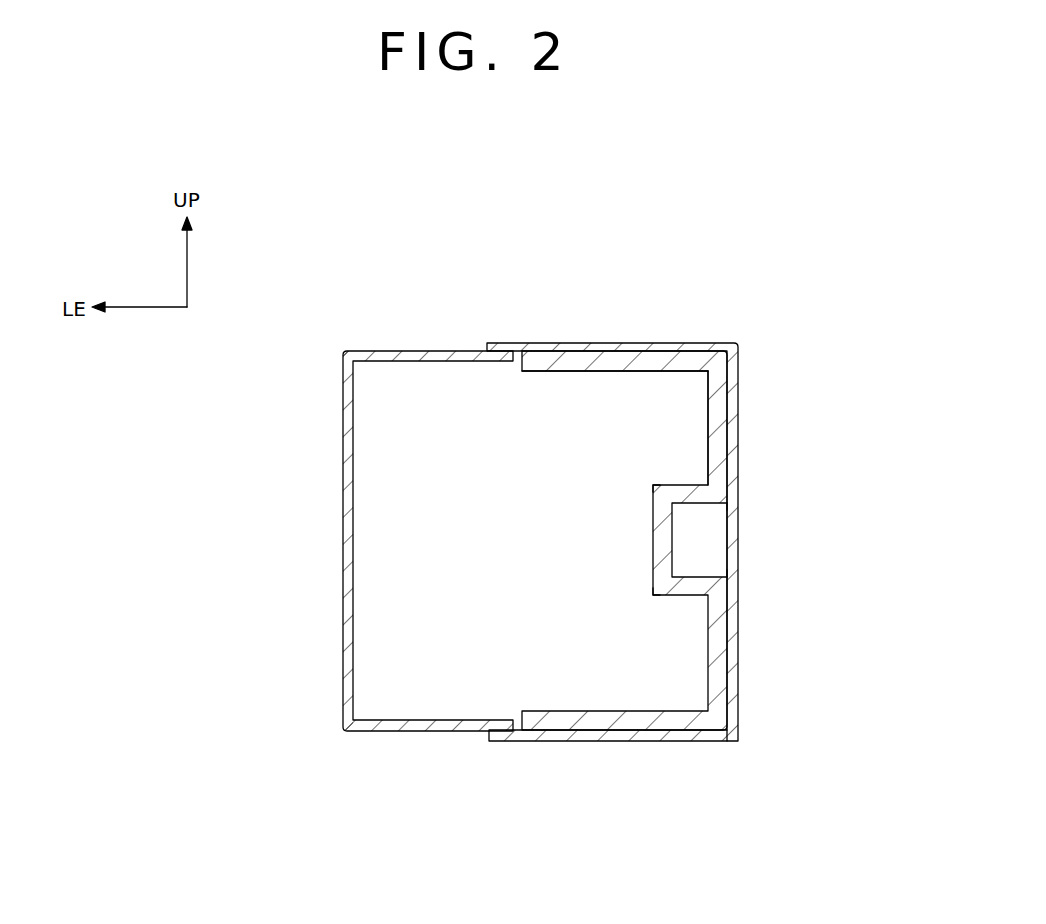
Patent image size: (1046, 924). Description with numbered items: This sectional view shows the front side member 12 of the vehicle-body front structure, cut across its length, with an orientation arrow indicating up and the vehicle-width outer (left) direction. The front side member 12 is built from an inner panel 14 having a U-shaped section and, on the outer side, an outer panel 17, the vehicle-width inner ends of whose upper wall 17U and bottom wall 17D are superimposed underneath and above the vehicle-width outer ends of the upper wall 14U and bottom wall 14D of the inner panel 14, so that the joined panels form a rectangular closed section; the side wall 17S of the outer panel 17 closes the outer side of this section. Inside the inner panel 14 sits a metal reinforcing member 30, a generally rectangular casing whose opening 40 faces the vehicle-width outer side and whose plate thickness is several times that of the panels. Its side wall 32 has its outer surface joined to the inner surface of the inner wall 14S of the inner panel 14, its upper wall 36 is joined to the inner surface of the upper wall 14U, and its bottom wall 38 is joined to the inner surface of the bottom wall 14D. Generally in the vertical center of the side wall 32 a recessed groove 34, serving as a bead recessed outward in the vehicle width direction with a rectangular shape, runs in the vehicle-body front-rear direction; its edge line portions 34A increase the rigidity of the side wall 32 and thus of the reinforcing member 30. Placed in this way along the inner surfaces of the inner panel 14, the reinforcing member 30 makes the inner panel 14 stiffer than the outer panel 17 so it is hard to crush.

The front side member 12 is at (646, 531).
The inner panel 14 is at (646, 548).
The upper wall of the inner panel 14U is at (632, 358).
The bottom wall of the inner panel 14D is at (645, 731).
The inner wall of the inner panel 14S is at (738, 535).
The outer panel 17 is at (379, 544).
The upper wall of the outer panel 17U is at (374, 350).
The side wall of cover 17S is at (346, 520).
The bottom wall of the outer panel 17D is at (385, 732).
The reinforcing member 30 is at (652, 528).
The side wall 32 is at (720, 393).
The recessed groove 34 is at (672, 577).
The edge line portions 34A is at (653, 485).
The upper wall 36 is at (667, 362).
The bottom wall 38 is at (682, 738).
The opening 40 is at (522, 371).